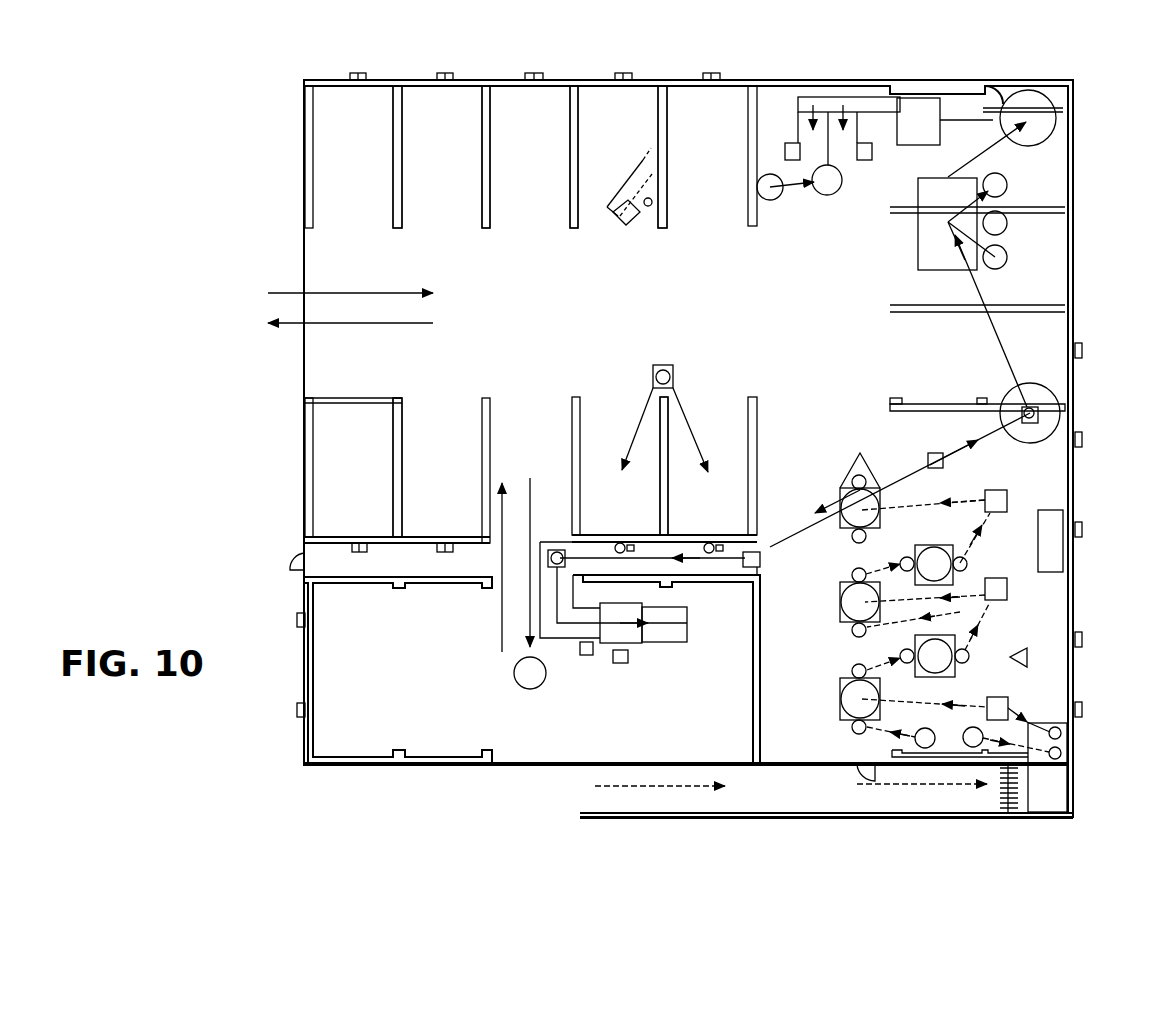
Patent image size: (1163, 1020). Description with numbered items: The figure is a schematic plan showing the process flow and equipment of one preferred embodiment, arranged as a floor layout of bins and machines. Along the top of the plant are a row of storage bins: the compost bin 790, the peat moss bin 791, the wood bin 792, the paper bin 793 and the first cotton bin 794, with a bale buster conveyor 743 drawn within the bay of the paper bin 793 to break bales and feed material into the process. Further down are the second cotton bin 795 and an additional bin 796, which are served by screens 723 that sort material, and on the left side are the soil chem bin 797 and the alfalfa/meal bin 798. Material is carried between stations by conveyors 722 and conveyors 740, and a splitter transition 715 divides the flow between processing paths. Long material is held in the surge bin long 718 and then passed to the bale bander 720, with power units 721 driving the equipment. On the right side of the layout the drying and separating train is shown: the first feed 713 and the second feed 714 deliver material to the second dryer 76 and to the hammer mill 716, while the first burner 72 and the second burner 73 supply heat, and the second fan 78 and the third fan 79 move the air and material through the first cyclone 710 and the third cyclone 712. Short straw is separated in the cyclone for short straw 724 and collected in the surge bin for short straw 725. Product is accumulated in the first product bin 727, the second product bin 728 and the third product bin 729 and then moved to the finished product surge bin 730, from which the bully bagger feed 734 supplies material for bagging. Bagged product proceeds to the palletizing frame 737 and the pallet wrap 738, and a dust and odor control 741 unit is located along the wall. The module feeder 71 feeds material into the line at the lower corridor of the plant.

The module feeder 71 is at (826, 809).
The burner 1 72 is at (928, 734).
The burner 2 73 is at (965, 743).
The dryer 2 76 is at (933, 565).
The fan 2 78 is at (995, 578).
The fan 3 79 is at (993, 492).
The cyclone 1 710 is at (1062, 746).
The cyclone 3 712 is at (850, 517).
The feed 1 713 is at (847, 699).
The feed 2 714 is at (850, 602).
The splitter transition 715 is at (555, 550).
The hammer mill 716 is at (858, 470).
The surge bin long 718 is at (530, 673).
The bale bander 720 is at (635, 640).
The power units 721 is at (620, 665).
The conveyors 722 is at (687, 633).
The screens 723 is at (667, 365).
The cyclone for short straw 724 is at (1038, 417).
The surge bin for short straw 725 is at (1042, 397).
The product bin 1 727 is at (1007, 260).
The product bin 2 728 is at (1007, 182).
The product bin 3 729 is at (1007, 227).
The finished product surge bin 730 is at (1032, 98).
The bully bagger feed 734 is at (930, 124).
The palletizing frame 737 is at (831, 195).
The pallet wrap 738 is at (773, 200).
The conveyors 740 is at (797, 190).
The dust and odor control 741 is at (1060, 550).
The bale buster conveyor 743 is at (613, 211).
The bin 1 compost 790 is at (366, 151).
The peat moss 791 is at (444, 148).
The bin 2 wood 792 is at (531, 146).
The bin 3 paper 793 is at (619, 135).
The bin 4 cotton 794 is at (708, 134).
The bin 5 cotton 795 is at (620, 466).
The bin 796 is at (708, 466).
The soil chem bin 797 is at (359, 483).
The alfalfa/meal 798 is at (449, 475).